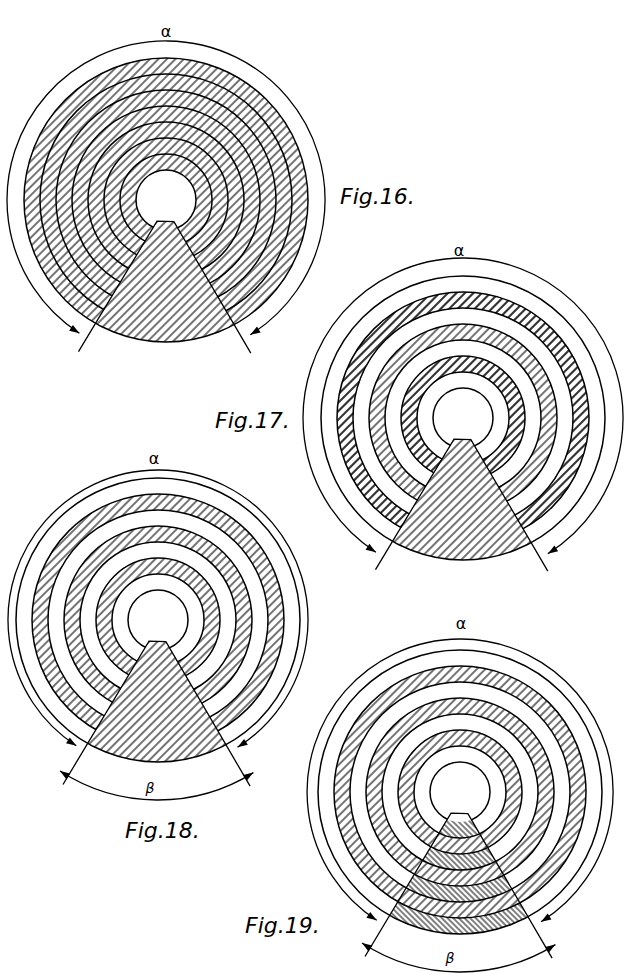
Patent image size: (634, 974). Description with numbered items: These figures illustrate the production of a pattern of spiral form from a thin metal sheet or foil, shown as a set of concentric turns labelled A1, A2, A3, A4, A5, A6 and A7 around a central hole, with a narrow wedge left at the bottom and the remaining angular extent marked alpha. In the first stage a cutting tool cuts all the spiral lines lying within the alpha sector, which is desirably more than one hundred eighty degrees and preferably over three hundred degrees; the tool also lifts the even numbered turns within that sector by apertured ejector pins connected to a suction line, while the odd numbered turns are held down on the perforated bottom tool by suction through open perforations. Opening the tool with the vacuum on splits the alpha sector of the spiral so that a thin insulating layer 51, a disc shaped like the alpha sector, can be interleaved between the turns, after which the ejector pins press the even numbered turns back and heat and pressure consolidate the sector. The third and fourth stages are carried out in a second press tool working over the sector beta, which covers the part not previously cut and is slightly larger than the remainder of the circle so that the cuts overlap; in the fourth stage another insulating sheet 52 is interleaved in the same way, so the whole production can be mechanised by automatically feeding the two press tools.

In FIG. 17, the insulating layer 51 is at (448, 418).
In FIG. 19, the insulating sheet 52 is at (460, 796).
In FIG. 16, the ring zone A1 is at (166, 200).
In FIG. 16, the ring zone A2 is at (166, 200).
In FIG. 17, the ring zone A2 is at (463, 418).
In FIG. 18, the ring zone A2 is at (158, 620).
In FIG. 19, the ring zone A2 is at (460, 792).
In FIG. 16, the ring zone A3 is at (166, 200).
In FIG. 16, the ring zone A4 is at (166, 200).
In FIG. 17, the ring zone A4 is at (463, 418).
In FIG. 18, the ring zone A4 is at (158, 620).
In FIG. 19, the ring zone A4 is at (460, 792).
In FIG. 16, the ring zone A5 is at (166, 200).
In FIG. 16, the ring zone A6 is at (166, 200).
In FIG. 17, the ring zone A6 is at (463, 418).
In FIG. 18, the ring zone A6 is at (158, 620).
In FIG. 19, the ring zone A6 is at (460, 792).
In FIG. 16, the ring zone A7 is at (166, 200).